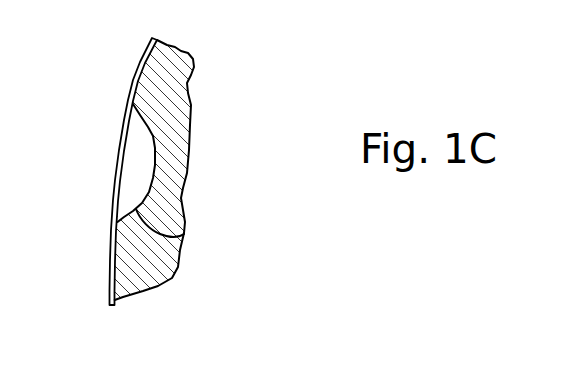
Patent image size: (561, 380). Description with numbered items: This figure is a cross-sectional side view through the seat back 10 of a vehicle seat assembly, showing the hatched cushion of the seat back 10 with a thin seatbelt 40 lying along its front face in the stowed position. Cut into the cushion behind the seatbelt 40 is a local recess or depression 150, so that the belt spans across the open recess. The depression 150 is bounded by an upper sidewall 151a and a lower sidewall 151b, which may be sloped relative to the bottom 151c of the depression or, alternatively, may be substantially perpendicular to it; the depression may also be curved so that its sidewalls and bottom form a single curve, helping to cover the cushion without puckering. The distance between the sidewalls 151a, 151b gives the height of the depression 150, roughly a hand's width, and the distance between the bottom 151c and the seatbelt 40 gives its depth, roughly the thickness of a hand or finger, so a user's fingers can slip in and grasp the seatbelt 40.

The seat back 10 is at (181, 190).
The seatbelt 40 is at (128, 121).
The depression 150 is at (133, 180).
The sidewall 151a is at (154, 136).
The sidewall 151b is at (182, 238).
The bottom 151c is at (155, 176).